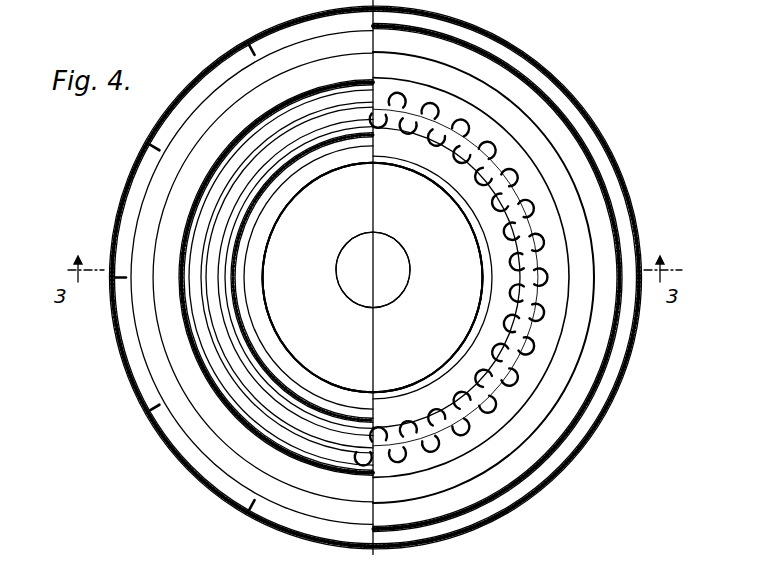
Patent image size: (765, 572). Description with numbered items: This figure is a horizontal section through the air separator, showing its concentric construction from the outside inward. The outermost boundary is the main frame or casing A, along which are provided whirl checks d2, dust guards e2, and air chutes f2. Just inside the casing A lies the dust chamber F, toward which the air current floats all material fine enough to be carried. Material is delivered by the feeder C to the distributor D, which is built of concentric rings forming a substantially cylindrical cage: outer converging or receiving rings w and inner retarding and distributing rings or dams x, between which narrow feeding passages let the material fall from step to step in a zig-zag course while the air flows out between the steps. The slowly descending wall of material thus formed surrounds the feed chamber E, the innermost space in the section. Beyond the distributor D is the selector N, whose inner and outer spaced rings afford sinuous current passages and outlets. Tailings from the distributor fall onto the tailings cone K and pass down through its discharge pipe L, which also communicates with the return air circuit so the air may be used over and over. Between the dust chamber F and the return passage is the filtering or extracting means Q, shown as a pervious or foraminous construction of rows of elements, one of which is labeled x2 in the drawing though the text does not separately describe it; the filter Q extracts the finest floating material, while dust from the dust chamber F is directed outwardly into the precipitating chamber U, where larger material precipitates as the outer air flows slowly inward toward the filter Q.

The main frame or casing A is at (376, 277).
The whirl checks d2 is at (152, 142).
The dust guards e2 is at (122, 197).
The dust chamber F is at (252, 278).
The selector N is at (228, 172).
The outer converging or receiving rings w is at (283, 305).
The distributor D is at (265, 233).
The tailings cone K is at (373, 277).
The inner retarding and distributing rings or dams x is at (373, 277).
The discharge pipe L is at (338, 262).
The feed chamber E is at (373, 269).
The air chutes f2 is at (602, 388).
The precipitating chamber U is at (483, 277).
The clip ring line x2 is at (505, 382).
The filtering or extracting means Q is at (495, 380).
The feeder C is at (446, 278).